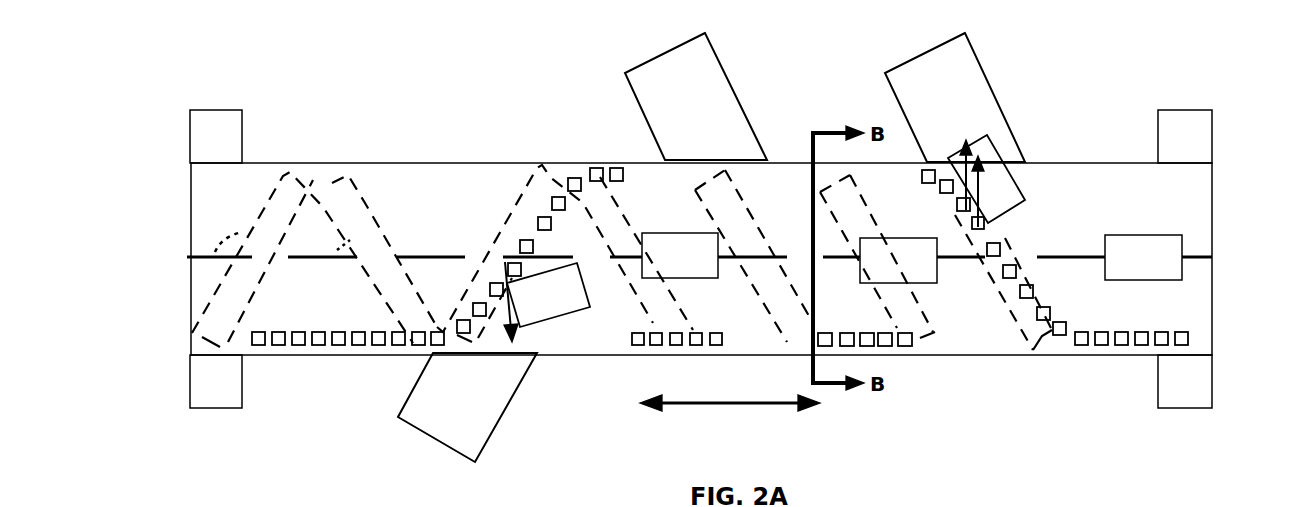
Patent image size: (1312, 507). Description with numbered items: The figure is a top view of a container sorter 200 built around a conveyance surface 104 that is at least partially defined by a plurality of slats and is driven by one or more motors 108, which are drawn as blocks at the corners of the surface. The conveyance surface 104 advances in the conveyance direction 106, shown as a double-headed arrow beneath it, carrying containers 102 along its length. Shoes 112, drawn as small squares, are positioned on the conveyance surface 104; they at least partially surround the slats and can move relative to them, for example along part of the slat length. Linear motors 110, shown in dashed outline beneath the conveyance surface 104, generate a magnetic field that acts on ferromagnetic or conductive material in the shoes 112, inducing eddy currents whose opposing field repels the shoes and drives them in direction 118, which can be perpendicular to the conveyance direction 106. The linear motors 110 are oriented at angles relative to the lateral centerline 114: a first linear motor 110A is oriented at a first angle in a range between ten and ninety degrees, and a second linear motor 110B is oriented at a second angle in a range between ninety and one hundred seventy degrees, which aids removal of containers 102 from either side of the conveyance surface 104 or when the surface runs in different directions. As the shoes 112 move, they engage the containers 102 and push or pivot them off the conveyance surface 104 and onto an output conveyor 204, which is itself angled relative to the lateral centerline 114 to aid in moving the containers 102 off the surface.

The container sorter 200 is at (118, 70).
The container 102 is at (1183, 248).
The conveyance surface 104 is at (1183, 200).
The conveyance direction 106 is at (733, 408).
The motor 108 is at (217, 108).
The linear motor 110 is at (542, 170).
The first linear motor 110A is at (293, 197).
The second linear motor 110B is at (353, 197).
The shoe 112 is at (518, 262).
The lateral centerline 114 is at (423, 257).
The direction 118 is at (520, 338).
The output conveyor 204 is at (720, 63).